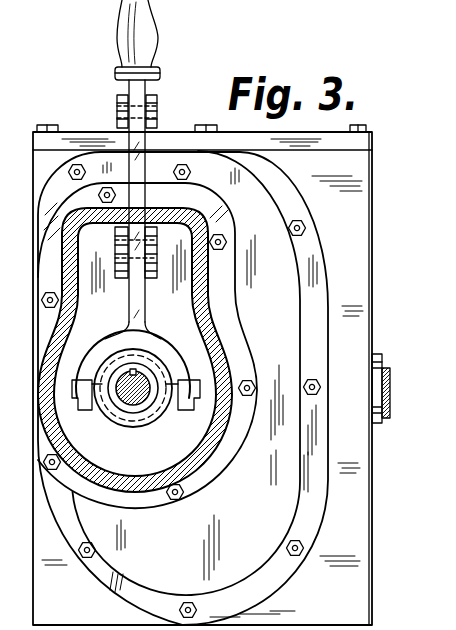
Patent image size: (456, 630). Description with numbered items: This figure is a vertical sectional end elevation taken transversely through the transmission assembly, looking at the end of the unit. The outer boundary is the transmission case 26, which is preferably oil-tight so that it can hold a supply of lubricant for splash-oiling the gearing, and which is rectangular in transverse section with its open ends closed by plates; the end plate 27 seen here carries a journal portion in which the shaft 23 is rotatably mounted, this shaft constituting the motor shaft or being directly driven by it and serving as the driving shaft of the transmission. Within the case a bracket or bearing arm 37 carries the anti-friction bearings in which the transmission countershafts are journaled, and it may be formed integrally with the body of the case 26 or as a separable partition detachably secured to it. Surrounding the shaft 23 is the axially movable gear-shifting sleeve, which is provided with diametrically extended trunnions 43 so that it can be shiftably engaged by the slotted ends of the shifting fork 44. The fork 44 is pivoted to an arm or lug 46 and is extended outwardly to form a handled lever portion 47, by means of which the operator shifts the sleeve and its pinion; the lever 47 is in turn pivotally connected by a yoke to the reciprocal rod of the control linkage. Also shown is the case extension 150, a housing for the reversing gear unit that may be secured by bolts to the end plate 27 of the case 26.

The shaft 23 is at (122, 416).
The case 26 is at (33, 277).
The end plate 27 is at (318, 250).
The bracket or bearing arm 37 is at (312, 163).
The trunnions 43 is at (186, 411).
The shifting fork 44 is at (111, 334).
The arm or lug 46 is at (152, 279).
The handled lever portion 47 is at (148, 42).
The case extension 150 is at (196, 308).